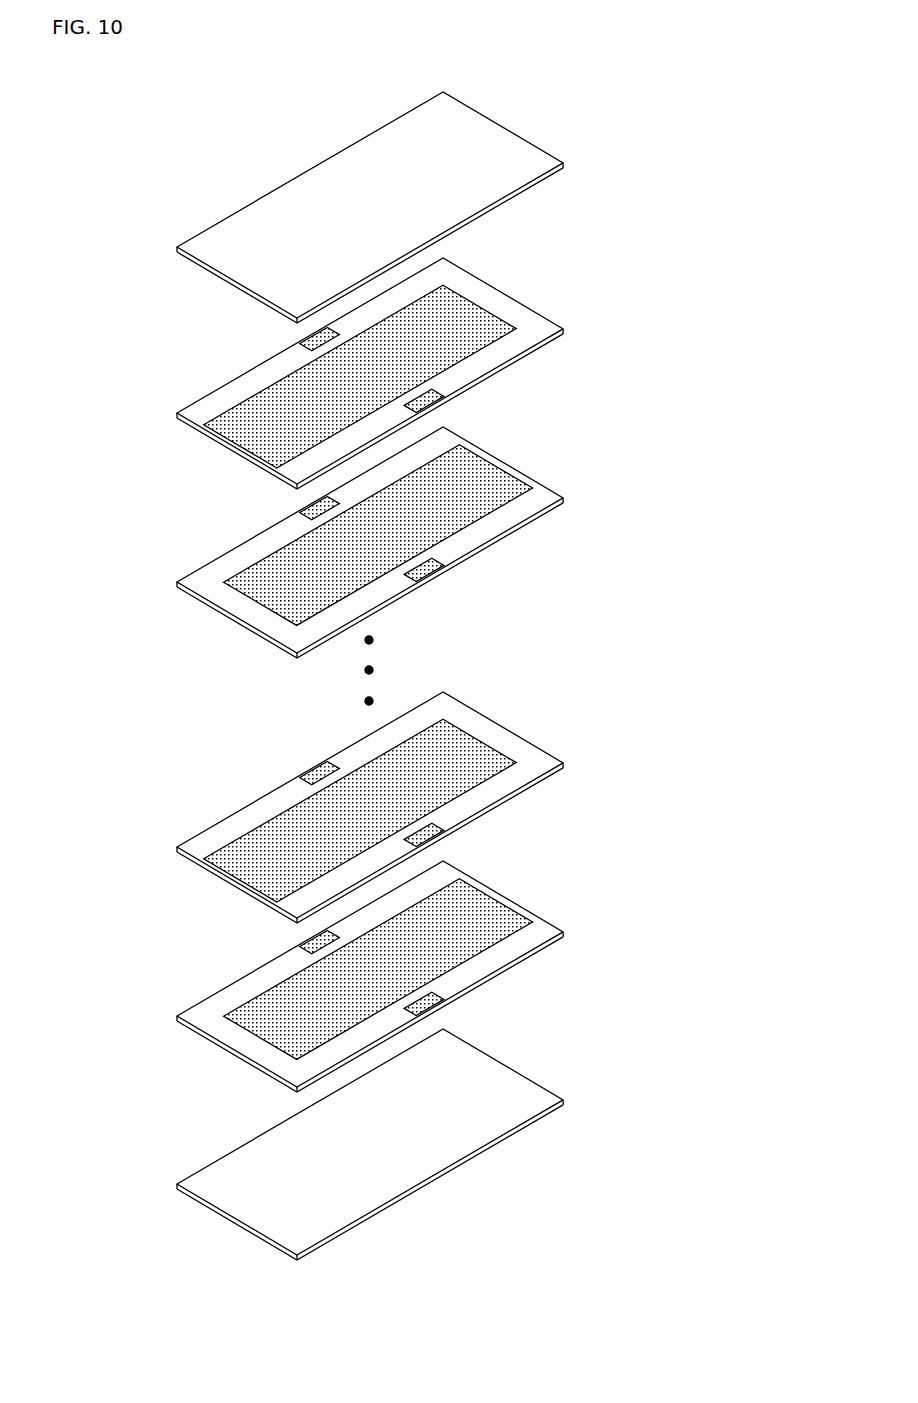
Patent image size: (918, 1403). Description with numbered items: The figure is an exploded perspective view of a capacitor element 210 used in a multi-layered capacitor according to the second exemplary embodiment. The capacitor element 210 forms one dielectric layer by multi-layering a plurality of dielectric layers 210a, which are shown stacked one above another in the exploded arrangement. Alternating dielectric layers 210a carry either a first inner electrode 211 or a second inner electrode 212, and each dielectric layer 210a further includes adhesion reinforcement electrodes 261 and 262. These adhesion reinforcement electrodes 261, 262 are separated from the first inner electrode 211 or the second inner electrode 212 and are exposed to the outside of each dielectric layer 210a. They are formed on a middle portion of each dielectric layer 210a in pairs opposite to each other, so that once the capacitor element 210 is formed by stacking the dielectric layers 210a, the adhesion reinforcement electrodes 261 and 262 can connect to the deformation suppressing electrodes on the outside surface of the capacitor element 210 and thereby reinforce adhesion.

The capacitor element 210 is at (77, 101).
The dielectric layer 210a is at (499, 292).
The first inner electrode 211 is at (243, 438).
The second inner electrode 212 is at (505, 470).
The adhesion reinforcement electrode 261 is at (300, 342).
The adhesion reinforcement electrode 262 is at (447, 402).